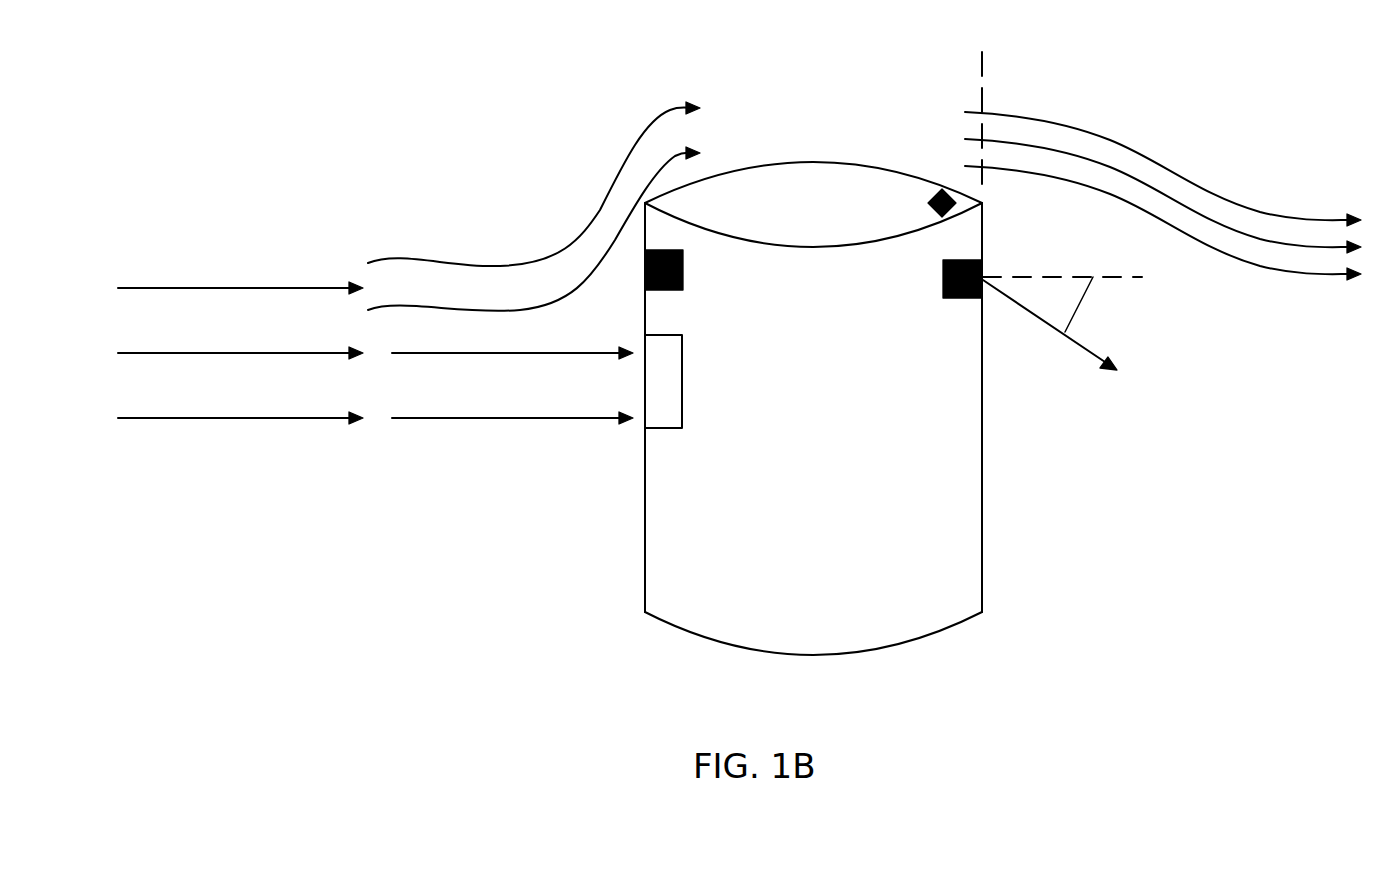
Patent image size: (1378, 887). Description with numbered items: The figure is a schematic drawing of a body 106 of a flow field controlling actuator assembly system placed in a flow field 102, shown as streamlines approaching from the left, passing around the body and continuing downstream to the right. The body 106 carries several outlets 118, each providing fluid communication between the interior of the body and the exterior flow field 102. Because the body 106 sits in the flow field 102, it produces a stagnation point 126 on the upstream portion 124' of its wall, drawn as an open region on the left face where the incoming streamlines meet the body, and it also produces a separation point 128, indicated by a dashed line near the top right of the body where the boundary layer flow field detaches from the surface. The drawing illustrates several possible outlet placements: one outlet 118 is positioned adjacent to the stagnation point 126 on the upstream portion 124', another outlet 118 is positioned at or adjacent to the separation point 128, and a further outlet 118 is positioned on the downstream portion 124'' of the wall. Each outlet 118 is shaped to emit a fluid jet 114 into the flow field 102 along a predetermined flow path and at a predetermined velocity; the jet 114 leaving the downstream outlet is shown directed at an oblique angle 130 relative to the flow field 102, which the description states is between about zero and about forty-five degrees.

The flow field 102 is at (160, 288).
The body 106 is at (983, 512).
The fluid jet 114 is at (1122, 370).
The outlet 118 is at (683, 272).
The upstream portion of wall 124' is at (597, 531).
The downstream portion of wall 124'' is at (1029, 531).
The stagnation point 126 is at (683, 400).
The separation point 128 is at (982, 58).
The oblique angle 130 is at (1085, 305).